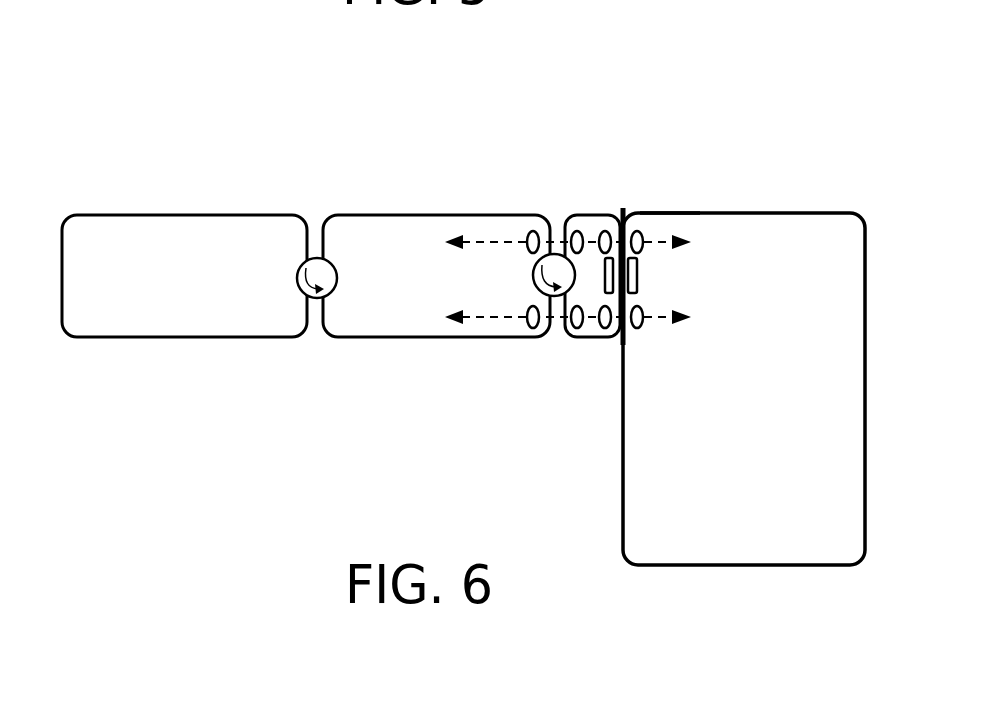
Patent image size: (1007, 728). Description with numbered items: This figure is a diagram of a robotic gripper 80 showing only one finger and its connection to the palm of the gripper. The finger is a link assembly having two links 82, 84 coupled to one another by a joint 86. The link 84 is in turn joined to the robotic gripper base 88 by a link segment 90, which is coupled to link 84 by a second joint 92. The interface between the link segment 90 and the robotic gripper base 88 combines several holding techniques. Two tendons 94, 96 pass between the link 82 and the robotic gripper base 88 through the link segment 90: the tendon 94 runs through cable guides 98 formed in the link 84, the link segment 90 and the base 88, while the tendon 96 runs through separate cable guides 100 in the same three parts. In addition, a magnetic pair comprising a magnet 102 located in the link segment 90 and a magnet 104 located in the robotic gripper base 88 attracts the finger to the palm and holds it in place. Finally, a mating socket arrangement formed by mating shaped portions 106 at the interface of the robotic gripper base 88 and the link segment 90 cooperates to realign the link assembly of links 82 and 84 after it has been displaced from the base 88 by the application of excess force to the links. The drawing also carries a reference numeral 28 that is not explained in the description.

The robotic gripper 80 is at (463, 282).
The link 82 is at (158, 232).
The link 84 is at (355, 232).
The joint 86 is at (313, 300).
The robotic gripper base 88 is at (815, 222).
The link segment 90 is at (583, 214).
The joint 92 is at (555, 298).
The tendon 94 is at (483, 240).
The tendon 96 is at (482, 318).
The cable guides 98 is at (531, 230).
The cable guides 100 is at (531, 327).
The magnet 102 is at (605, 276).
The magnet 104 is at (640, 277).
The mating shaped portions 106 is at (623, 209).
The electronic device 28 is at (627, 212).